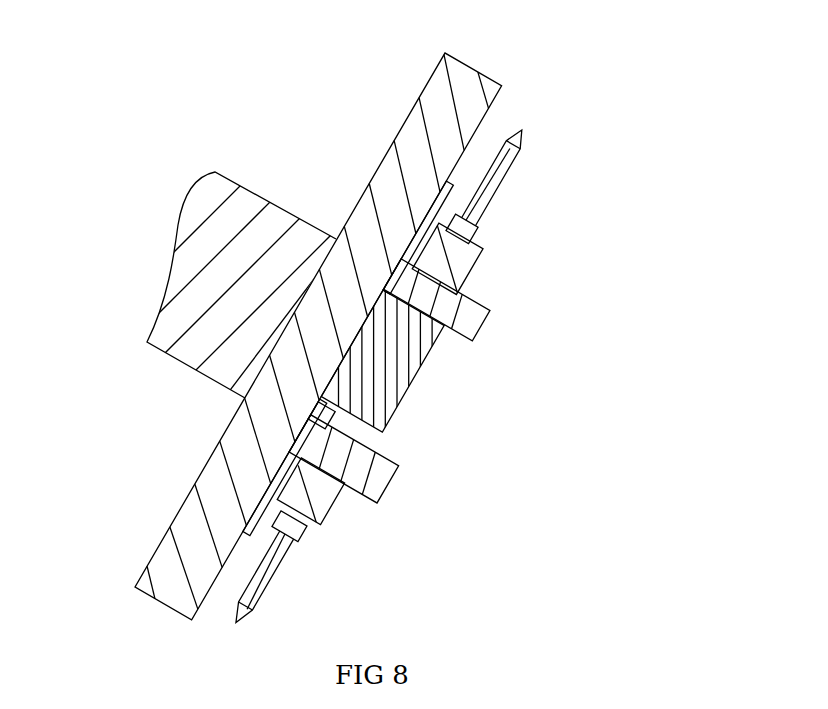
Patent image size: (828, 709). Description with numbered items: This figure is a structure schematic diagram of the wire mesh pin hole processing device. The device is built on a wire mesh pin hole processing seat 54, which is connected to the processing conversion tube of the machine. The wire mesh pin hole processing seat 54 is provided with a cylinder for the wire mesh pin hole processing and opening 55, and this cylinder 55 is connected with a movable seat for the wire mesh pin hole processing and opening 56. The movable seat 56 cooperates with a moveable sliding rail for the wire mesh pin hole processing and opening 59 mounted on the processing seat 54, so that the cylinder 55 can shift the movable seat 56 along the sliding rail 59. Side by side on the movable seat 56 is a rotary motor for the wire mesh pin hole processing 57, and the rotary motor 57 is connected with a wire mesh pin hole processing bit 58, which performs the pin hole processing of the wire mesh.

The wire mesh pin hole processing seat 54 is at (412, 170).
The cylinder for the wire mesh pin hole processing and opening 55 is at (383, 382).
The movable seat for the wire mesh pin hole processing and opening 56 is at (465, 323).
The rotary motor for the wire mesh pin hole processing 57 is at (458, 279).
The wire mesh pin hole processing bit 58 is at (488, 195).
The moveable sliding rail for the wire mesh pin hole processing and opening 59 is at (268, 496).